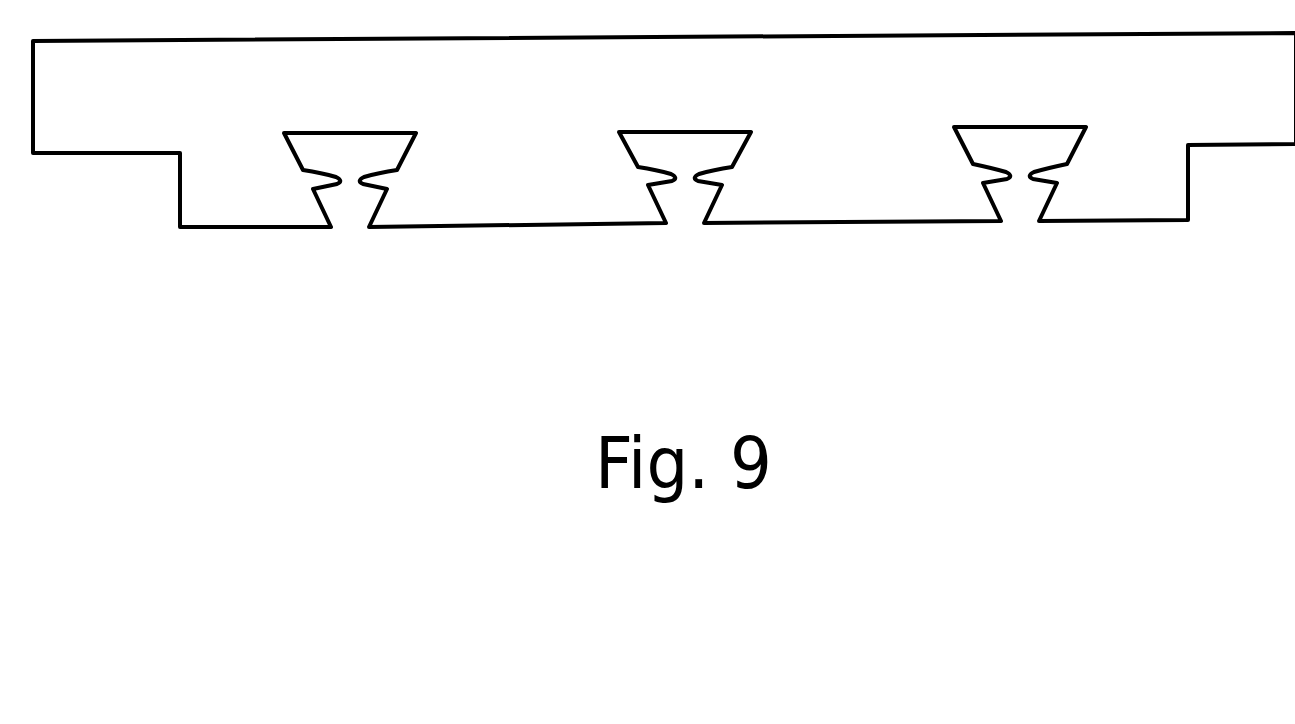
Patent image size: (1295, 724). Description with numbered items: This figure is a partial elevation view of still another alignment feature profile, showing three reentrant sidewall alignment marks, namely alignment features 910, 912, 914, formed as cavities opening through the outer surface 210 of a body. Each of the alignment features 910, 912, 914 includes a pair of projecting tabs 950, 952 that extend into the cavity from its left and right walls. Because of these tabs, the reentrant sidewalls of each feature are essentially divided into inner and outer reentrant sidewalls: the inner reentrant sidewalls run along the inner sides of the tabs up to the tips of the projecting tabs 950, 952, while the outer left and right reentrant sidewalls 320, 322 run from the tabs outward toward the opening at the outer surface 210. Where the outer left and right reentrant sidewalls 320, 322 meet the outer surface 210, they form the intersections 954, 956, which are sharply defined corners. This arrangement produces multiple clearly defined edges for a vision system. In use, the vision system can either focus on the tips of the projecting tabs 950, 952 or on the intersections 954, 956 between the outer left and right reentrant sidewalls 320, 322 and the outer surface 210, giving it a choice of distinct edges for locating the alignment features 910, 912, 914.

The outer surface 210 is at (873, 222).
The alignment feature 910 is at (347, 312).
The alignment feature 912 is at (684, 305).
The alignment feature 914 is at (1019, 350).
The projecting tab 950 is at (328, 188).
The projecting tab 952 is at (364, 186).
The intersection 954 is at (998, 221).
The intersection 956 is at (1040, 222).
The outer left reentrant sidewall 320 is at (663, 217).
The outer right reentrant sidewall 322 is at (703, 208).